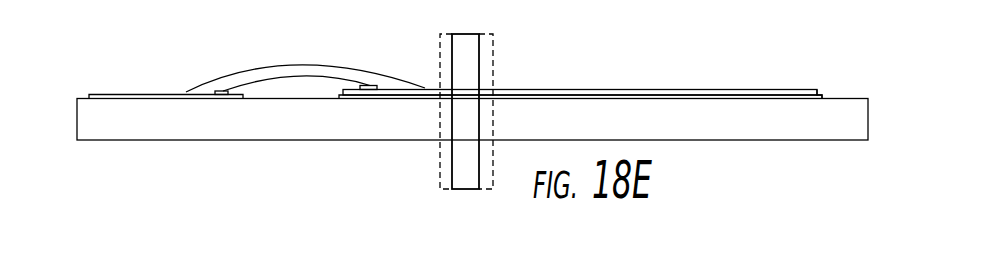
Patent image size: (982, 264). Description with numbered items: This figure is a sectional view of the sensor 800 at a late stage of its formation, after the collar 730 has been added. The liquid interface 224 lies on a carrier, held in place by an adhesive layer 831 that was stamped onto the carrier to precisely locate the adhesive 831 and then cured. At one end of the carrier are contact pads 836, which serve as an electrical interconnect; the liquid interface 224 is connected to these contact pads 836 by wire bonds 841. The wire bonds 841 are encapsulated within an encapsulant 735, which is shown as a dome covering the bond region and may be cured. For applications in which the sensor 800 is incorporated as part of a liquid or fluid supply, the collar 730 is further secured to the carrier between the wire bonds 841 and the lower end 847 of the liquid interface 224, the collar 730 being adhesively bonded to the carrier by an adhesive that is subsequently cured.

The sensor 800 is at (62, 90).
The contact pads 836 is at (137, 95).
The encapsulant 735 is at (243, 69).
The wire bonds 841 is at (323, 76).
The adhesive layer 831 is at (690, 95).
The liquid interface 224 is at (728, 89).
The lower end 847 is at (826, 77).
The collar 730 is at (462, 190).